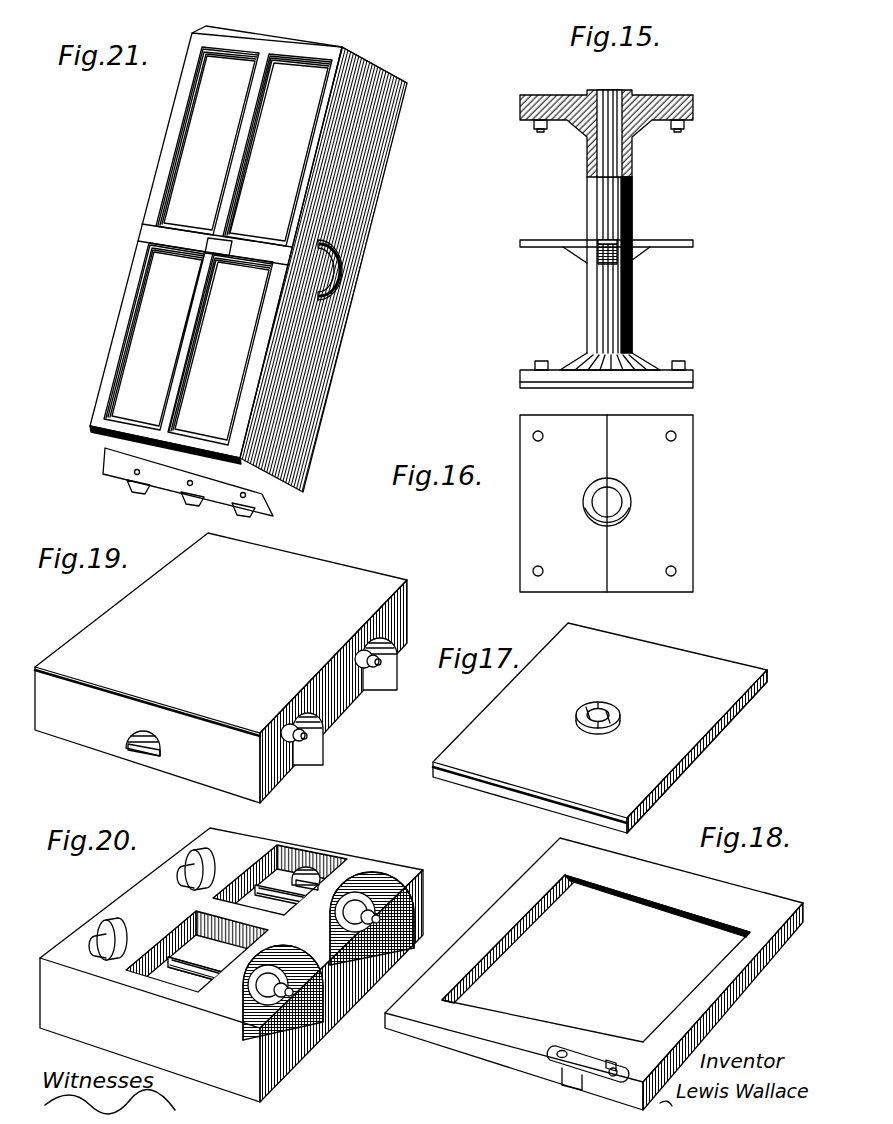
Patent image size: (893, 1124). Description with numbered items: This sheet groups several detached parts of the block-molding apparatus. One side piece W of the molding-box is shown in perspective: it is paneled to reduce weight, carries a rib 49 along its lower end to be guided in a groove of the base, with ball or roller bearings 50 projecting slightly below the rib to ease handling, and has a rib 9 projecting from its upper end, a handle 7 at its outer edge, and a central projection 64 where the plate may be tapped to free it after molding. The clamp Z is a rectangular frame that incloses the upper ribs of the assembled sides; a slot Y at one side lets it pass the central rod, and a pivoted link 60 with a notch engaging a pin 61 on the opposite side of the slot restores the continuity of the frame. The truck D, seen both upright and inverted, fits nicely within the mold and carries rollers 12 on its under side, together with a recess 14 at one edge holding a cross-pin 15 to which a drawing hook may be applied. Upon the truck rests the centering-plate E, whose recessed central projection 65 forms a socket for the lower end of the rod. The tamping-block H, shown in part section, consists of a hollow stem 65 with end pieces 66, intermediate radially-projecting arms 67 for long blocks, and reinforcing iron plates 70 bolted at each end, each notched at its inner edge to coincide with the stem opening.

In FIG. 21, the side piece W is at (160, 155).
In FIG. 21, the projection 64 is at (192, 243).
In FIG. 21, the rib 9 is at (404, 82).
In FIG. 21, the handle 7 is at (344, 277).
In FIG. 21, the rib 49 is at (103, 466).
In FIG. 21, the ball or roller bearing 50 is at (236, 512).
In FIG. 15, the iron plate 70 is at (698, 97).
In FIG. 16, the iron plate 70 is at (524, 513).
In FIG. 15, the end piece 66 is at (525, 127).
In FIG. 15, the hollow stem 65 is at (617, 273).
In FIG. 17, the hollow stem 65 is at (620, 715).
In FIG. 15, the tamping-block H is at (627, 242).
In FIG. 15, the radially-projecting arm 67 is at (566, 275).
In FIG. 17, the centering-plate E is at (720, 657).
In FIG. 18, the clamp Z is at (528, 876).
In FIG. 18, the link 60 is at (572, 1050).
In FIG. 18, the pin 61 is at (616, 1062).
In FIG. 18, the slot Y is at (574, 1086).
In FIG. 19, the truck D is at (221, 668).
In FIG. 20, the truck D is at (231, 965).
In FIG. 19, the roller 12 is at (352, 670).
In FIG. 20, the roller 12 is at (104, 930).
In FIG. 19, the recess 14 is at (150, 756).
In FIG. 20, the recess 14 is at (300, 870).
In FIG. 19, the cross-pin 15 is at (130, 746).
In FIG. 20, the cross-pin 15 is at (318, 878).